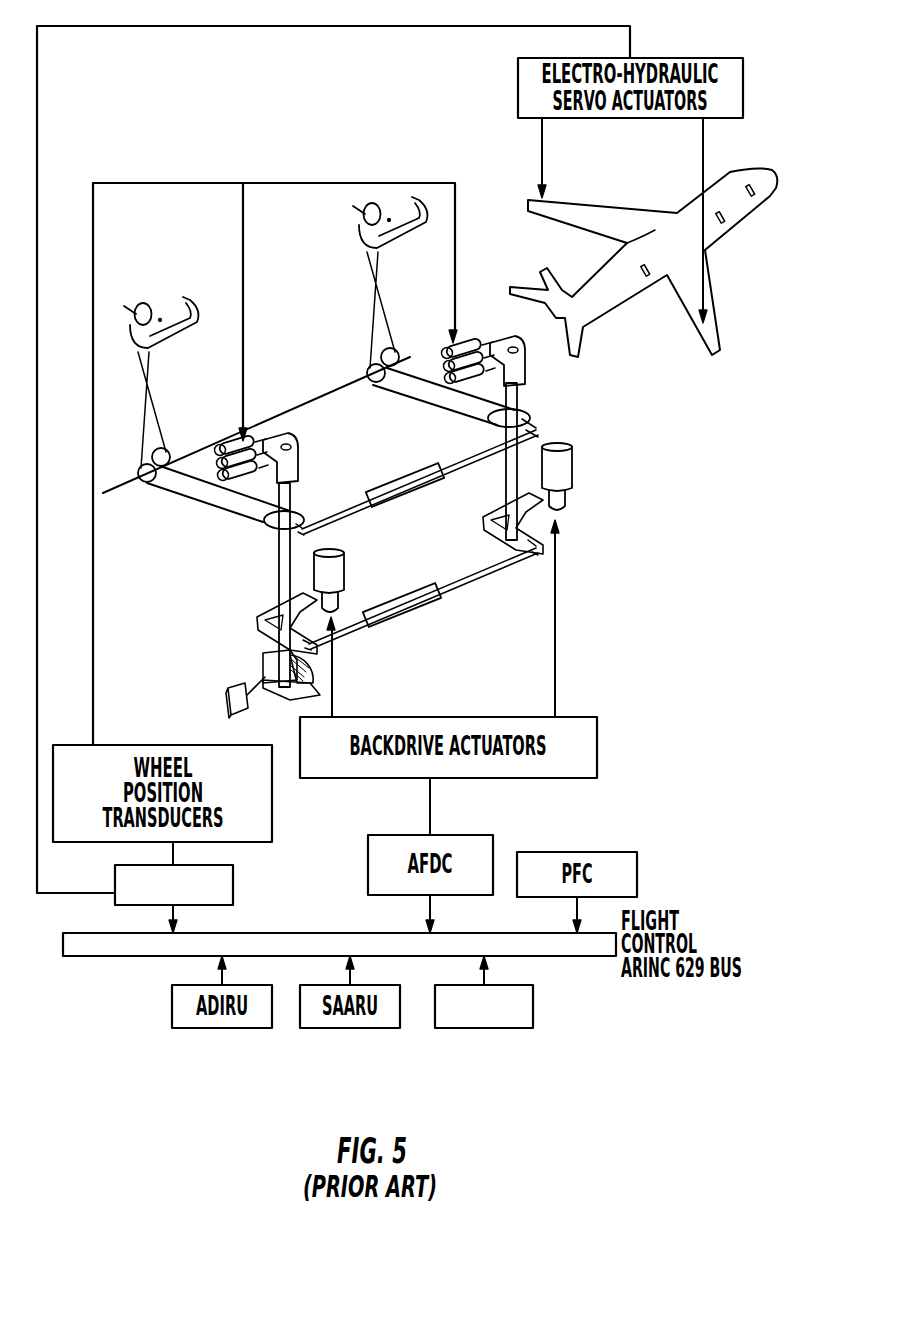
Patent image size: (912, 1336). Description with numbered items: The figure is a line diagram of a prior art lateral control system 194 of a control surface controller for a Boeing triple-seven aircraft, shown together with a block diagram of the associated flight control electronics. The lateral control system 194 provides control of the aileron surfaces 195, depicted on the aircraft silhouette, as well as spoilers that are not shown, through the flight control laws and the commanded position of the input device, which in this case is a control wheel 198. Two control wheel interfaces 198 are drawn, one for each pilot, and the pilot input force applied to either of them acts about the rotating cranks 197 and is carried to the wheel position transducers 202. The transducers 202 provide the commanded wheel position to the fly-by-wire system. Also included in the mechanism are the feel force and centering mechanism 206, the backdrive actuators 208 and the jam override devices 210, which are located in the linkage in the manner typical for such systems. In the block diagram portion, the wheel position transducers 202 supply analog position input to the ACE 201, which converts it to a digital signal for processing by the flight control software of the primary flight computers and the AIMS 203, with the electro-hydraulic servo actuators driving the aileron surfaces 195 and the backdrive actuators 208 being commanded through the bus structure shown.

The lateral control system 194 is at (607, 500).
The aileron surfaces 195 is at (548, 212).
The rotating cranks 197 is at (522, 415).
The control wheel 198 is at (193, 297).
The ACE 201 is at (222, 888).
The wheel position transducers 202 is at (233, 437).
The AIMS 203 is at (518, 1018).
The feel force and centering mechanism 206 is at (267, 663).
The backdrive actuators 208 is at (567, 467).
The jam override devices 210 is at (388, 498).